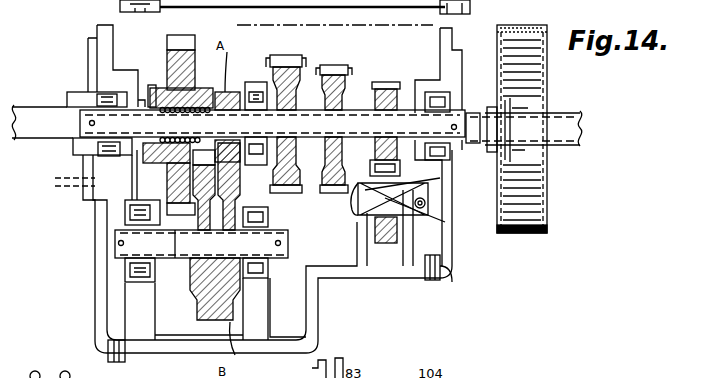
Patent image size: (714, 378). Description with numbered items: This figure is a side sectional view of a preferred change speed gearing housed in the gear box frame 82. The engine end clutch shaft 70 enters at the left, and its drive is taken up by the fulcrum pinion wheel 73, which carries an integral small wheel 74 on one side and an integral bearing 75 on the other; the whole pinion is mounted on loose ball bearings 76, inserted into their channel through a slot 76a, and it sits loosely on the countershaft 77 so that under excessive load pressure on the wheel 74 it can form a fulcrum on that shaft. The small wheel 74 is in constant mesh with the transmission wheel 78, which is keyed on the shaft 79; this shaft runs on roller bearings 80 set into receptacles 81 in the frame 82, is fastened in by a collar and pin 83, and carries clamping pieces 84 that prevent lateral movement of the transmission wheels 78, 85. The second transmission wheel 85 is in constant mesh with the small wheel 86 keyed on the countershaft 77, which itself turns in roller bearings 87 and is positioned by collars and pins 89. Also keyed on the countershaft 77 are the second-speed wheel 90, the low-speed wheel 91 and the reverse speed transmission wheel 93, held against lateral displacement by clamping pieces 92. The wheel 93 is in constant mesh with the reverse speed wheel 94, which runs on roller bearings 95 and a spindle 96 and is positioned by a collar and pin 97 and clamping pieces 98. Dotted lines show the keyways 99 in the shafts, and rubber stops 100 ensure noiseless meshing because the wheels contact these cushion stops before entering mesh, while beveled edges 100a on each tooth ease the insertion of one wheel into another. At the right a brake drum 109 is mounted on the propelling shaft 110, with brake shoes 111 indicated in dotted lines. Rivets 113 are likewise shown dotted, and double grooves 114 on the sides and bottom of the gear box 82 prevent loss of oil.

The engine end clutch shaft 70 is at (42, 122).
The fulcrum pinion wheel 73 is at (181, 38).
The small wheel 74 is at (205, 88).
The bearing 75 is at (165, 170).
The loose ball bearings 76 is at (205, 143).
The slot 76a is at (155, 85).
The countershaft 77 is at (280, 126).
The transmission wheel 78 is at (197, 320).
The shaft 79 is at (201, 200).
The roller bearings 80 is at (125, 214).
The receptacles 81 is at (200, 317).
The gear box frame 82 is at (100, 248).
The collar and pin 83 is at (125, 268).
The clamping pieces 84 is at (183, 260).
The transmission wheel 85 is at (245, 346).
The small wheel 86 is at (237, 25).
The roller bearings 87 is at (95, 100).
The collars and pins 89 is at (88, 126).
The second-speed wheel 90 is at (287, 55).
The low-speed wheel 91 is at (334, 121).
The clamping pieces 92 is at (138, 95).
The reverse speed transmission wheel 93 is at (390, 84).
The reverse speed wheel 94 is at (386, 243).
The roller bearings 95 is at (440, 180).
The spindle 96 is at (355, 215).
The collar and pin 97 is at (425, 203).
The clamping pieces 98 is at (445, 224).
The keyways 99 is at (412, 122).
The rubber stops 100 is at (255, 82).
The beveled edges 100a is at (340, 68).
The brake drum 109 is at (525, 25).
The propelling shaft 110 is at (565, 113).
The brake shoes 111 is at (547, 180).
The rivets 113 is at (80, 188).
The double grooves 114 is at (108, 345).